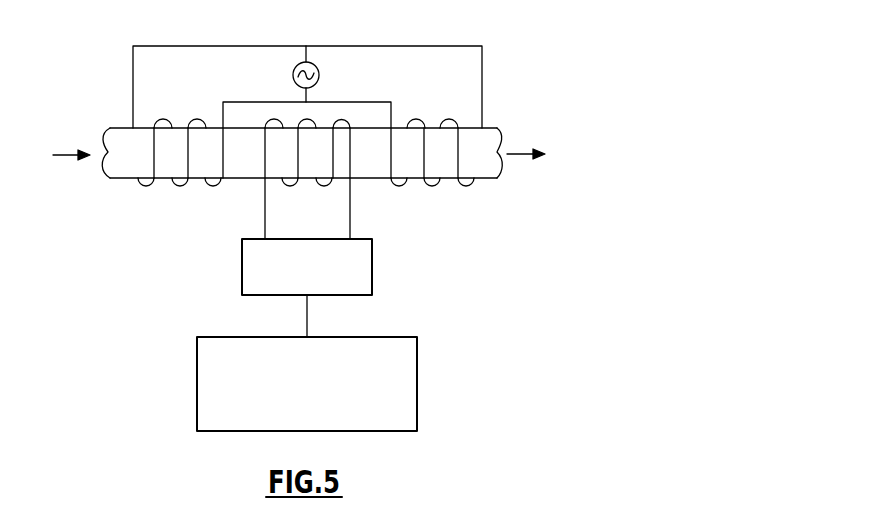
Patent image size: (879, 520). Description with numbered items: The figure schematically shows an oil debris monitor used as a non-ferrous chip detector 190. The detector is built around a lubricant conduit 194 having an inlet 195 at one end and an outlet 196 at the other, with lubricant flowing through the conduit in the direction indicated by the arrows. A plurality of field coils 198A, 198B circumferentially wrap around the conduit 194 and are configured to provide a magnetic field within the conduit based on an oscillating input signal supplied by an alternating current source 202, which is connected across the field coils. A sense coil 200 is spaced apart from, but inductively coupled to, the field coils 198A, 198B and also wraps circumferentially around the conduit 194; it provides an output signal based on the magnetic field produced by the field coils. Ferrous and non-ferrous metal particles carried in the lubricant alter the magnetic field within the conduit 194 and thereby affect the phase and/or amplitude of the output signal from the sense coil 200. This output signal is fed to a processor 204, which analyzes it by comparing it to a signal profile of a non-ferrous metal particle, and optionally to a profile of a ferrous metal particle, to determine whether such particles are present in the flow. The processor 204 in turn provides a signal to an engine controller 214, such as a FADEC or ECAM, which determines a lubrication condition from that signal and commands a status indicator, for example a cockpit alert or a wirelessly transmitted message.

The non-ferrous chip detector 190 is at (527, 43).
The lubricant conduit 194 is at (238, 180).
The inlet 195 is at (105, 135).
The outlet 196 is at (500, 138).
The field coil 198A is at (145, 187).
The field coil 198B is at (434, 187).
The sense coil 200 is at (289, 188).
The alternating current source 202 is at (323, 72).
The processor 204 is at (242, 265).
The engine controller 214 is at (197, 365).